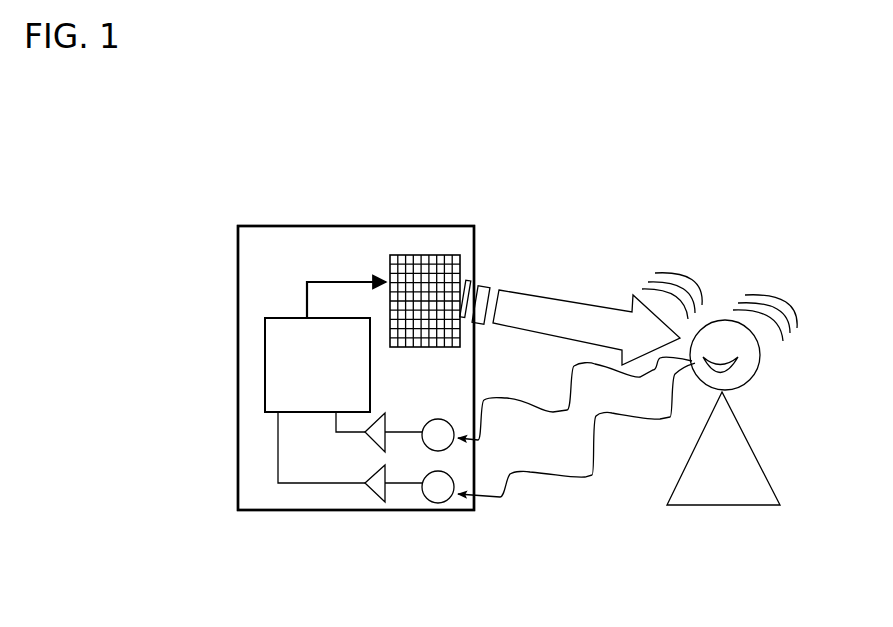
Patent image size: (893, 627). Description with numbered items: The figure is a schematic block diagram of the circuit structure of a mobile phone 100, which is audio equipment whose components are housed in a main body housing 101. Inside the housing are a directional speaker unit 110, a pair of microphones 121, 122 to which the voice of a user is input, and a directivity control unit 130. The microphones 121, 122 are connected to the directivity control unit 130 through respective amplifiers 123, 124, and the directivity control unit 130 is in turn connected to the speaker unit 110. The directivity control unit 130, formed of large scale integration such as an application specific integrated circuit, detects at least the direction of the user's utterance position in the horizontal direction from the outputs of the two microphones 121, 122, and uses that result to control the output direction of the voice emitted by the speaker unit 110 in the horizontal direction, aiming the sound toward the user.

The mobile phone 100 is at (505, 209).
The main body housing 101 is at (235, 413).
The directional speaker unit 110 is at (422, 250).
The microphone 121 is at (451, 448).
The microphone 122 is at (447, 503).
The amplifier 123 is at (377, 455).
The amplifier 124 is at (383, 494).
The directivity control unit 130 is at (261, 360).